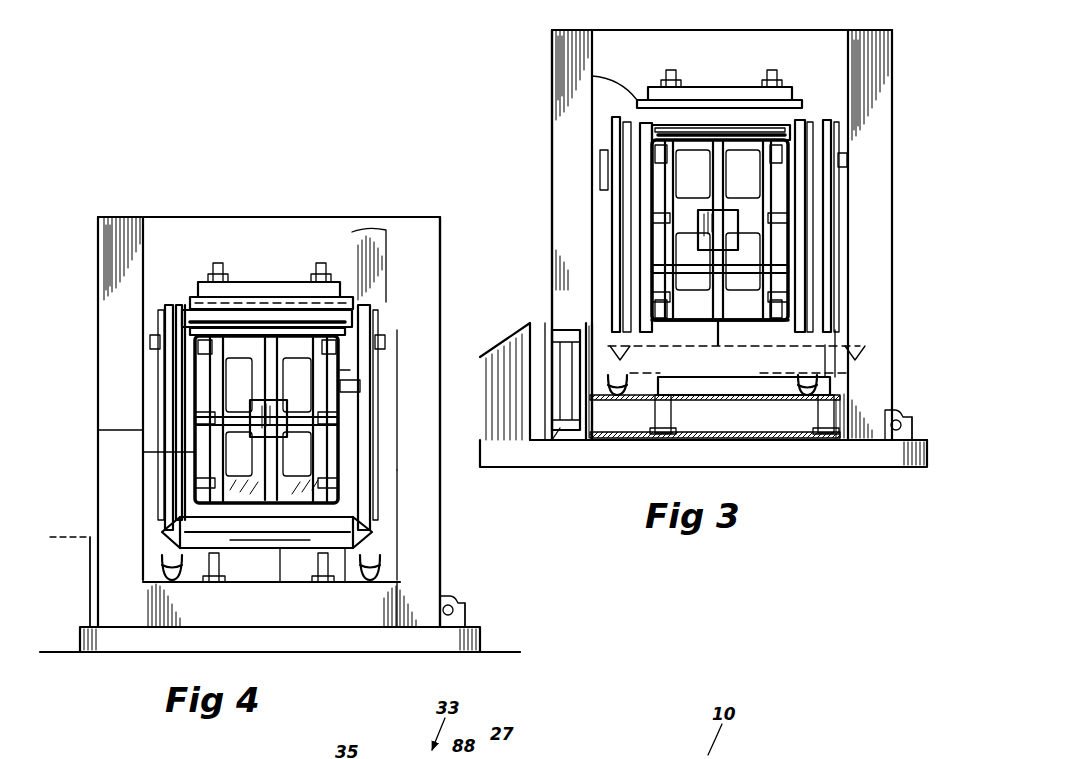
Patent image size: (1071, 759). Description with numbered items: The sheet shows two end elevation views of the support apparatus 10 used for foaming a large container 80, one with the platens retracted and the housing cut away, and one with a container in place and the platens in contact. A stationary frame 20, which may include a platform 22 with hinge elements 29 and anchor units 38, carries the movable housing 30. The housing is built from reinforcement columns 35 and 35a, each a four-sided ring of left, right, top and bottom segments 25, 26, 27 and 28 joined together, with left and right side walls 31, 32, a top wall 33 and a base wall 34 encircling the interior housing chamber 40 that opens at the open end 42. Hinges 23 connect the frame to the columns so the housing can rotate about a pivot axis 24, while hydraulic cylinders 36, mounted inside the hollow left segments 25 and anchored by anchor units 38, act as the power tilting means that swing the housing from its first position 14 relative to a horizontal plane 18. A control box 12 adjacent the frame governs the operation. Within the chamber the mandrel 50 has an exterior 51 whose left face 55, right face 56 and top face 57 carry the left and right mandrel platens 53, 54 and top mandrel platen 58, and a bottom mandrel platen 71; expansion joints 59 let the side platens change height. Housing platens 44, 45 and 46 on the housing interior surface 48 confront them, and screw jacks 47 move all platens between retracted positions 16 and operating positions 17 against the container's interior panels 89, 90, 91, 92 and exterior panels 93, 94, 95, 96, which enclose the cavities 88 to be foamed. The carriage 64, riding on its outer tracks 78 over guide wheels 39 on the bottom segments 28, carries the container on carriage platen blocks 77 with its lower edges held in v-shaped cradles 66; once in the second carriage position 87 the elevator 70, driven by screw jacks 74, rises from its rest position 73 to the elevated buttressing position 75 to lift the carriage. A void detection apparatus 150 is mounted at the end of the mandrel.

In FIG. 4, the support apparatus 10 is at (125, 140).
In FIG. 3, the support apparatus 10 is at (500, 45).
In FIG. 4, the control box 12 is at (85, 537).
In FIG. 3, the control box 12 is at (505, 355).
In FIG. 4, the first position 14 is at (442, 217).
In FIG. 3, the first position 14 is at (548, 142).
In FIG. 3, the retracted positions 16 is at (590, 216).
In FIG. 4, the operating positions 17 is at (165, 545).
In FIG. 4, the horizontal plane 18 is at (490, 652).
In FIG. 4, the stationary frame 20 is at (485, 652).
In FIG. 3, the stationary frame 20 is at (640, 468).
In FIG. 4, the platform 22 is at (428, 640).
In FIG. 3, the platform 22 is at (605, 452).
In FIG. 4, the hinges 23 is at (452, 598).
In FIG. 3, the hinges 23 is at (893, 410).
In FIG. 4, the pivot axis 24 is at (455, 606).
In FIG. 3, the pivot axis 24 is at (893, 445).
In FIG. 4, the left segment 25 is at (100, 424).
In FIG. 3, the left segment 25 is at (545, 275).
In FIG. 4, the right segment 26 is at (440, 482).
In FIG. 3, the right segment 26 is at (893, 175).
In FIG. 4, the top segment 27 is at (310, 250).
In FIG. 3, the top segment 27 is at (722, 60).
In FIG. 4, the bottom segment 28 is at (375, 615).
In FIG. 3, the bottom segment 28 is at (830, 430).
In FIG. 4, the hinge elements 29 is at (466, 616).
In FIG. 3, the hinge elements 29 is at (900, 425).
In FIG. 4, the housing 30 is at (118, 215).
In FIG. 3, the housing 30 is at (505, 112).
In FIG. 4, the left side wall 31 is at (155, 258).
In FIG. 3, the left side wall 31 is at (548, 160).
In FIG. 4, the right side wall 32 is at (440, 432).
In FIG. 3, the right side wall 32 is at (896, 225).
In FIG. 4, the top wall 33 is at (300, 217).
In FIG. 3, the top wall 33 is at (850, 30).
In FIG. 4, the base wall 34 is at (287, 560).
In FIG. 3, the reinforcement columns 35 is at (548, 36).
In FIG. 4, the reinforcement column at open end 35a is at (395, 218).
In FIG. 3, the reinforcement column at open end 35a is at (590, 74).
In FIG. 3, the hydraulic cylinders 36 is at (548, 348).
In FIG. 3, the anchor units 38 is at (575, 445).
In FIG. 4, the guide wheels 39 is at (200, 570).
In FIG. 3, the guide wheels 39 is at (620, 395).
In FIG. 3, the interior housing chamber 40 is at (848, 98).
In FIG. 4, the open end 42 is at (405, 288).
In FIG. 3, the open end 42 is at (850, 246).
In FIG. 4, the left housing platen 44 is at (160, 320).
In FIG. 3, the left housing platen 44 is at (592, 128).
In FIG. 4, the right housing platen 45 is at (378, 315).
In FIG. 3, the right housing platen 45 is at (842, 125).
In FIG. 4, the top housing platen 46 is at (300, 320).
In FIG. 3, the top housing platen 46 is at (640, 100).
In FIG. 4, the screw jacks 47 is at (218, 266).
In FIG. 3, the screw jacks 47 is at (668, 74).
In FIG. 4, the housing interior surface 48 is at (143, 262).
In FIG. 3, the housing interior surface 48 is at (850, 110).
In FIG. 4, the mandrel 50 is at (352, 372).
In FIG. 3, the mandrel 50 is at (716, 340).
In FIG. 3, the mandrel exterior 51 is at (720, 329).
In FIG. 4, the left mandrel platen 53 is at (170, 385).
In FIG. 3, the left mandrel platen 53 is at (612, 120).
In FIG. 4, the right mandrel platen 54 is at (352, 440).
In FIG. 3, the right mandrel platen 54 is at (815, 120).
In FIG. 3, the left face 55 is at (645, 272).
In FIG. 3, the right face 56 is at (790, 272).
In FIG. 3, the top face 57 is at (714, 138).
In FIG. 4, the top mandrel platen 58 is at (320, 315).
In FIG. 3, the top mandrel platen 58 is at (722, 128).
In FIG. 3, the expansion joints 59 is at (625, 160).
In FIG. 4, the carriage 64 is at (350, 560).
In FIG. 4, the v-shaped cradles 66 is at (165, 525).
In FIG. 4, the elevator 70 is at (300, 582).
In FIG. 3, the elevator 70 is at (740, 372).
In FIG. 3, the bottom mandrel platen 71 is at (730, 318).
In FIG. 3, the rest position 73 is at (830, 350).
In FIG. 4, the screw jacks 74 is at (222, 580).
In FIG. 3, the screw jacks 74 is at (818, 412).
In FIG. 4, the elevated buttressing position 75 is at (268, 560).
In FIG. 4, the carriage platen blocks 77 is at (262, 548).
In FIG. 4, the outer tracks 78 is at (165, 540).
In FIG. 4, the container 80 is at (172, 298).
In FIG. 3, the second carriage position 87 is at (828, 370).
In FIG. 4, the cavities 88 is at (185, 312).
In FIG. 4, the top interior surface panel 89 is at (278, 320).
In FIG. 4, the left interior surface panel 90 is at (205, 450).
In FIG. 4, the right interior surface panel 91 is at (345, 378).
In FIG. 4, the bottom interior surface panel 92 is at (270, 490).
In FIG. 4, the top exterior surface panel 93 is at (262, 318).
In FIG. 4, the left exterior surface panel 94 is at (145, 452).
In FIG. 4, the right exterior surface panel 95 is at (360, 386).
In FIG. 4, the bottom exterior surface panel 96 is at (283, 560).
In FIG. 3, the void detection apparatus 150 is at (728, 206).